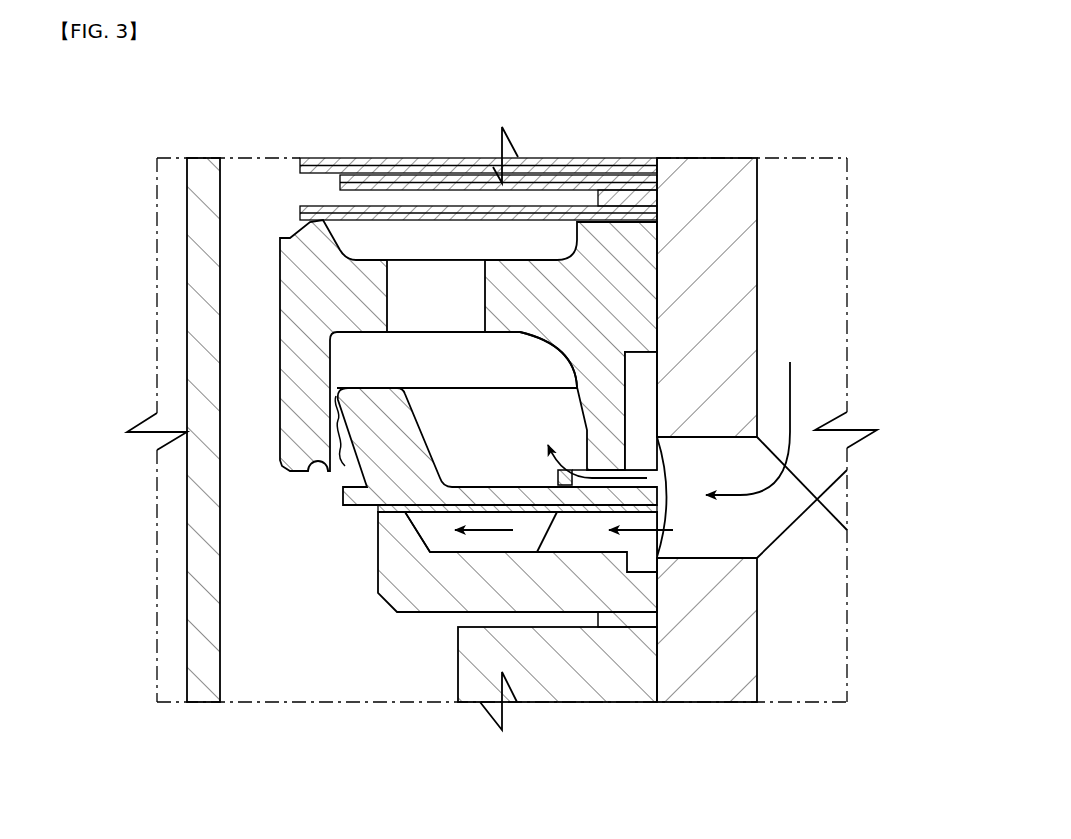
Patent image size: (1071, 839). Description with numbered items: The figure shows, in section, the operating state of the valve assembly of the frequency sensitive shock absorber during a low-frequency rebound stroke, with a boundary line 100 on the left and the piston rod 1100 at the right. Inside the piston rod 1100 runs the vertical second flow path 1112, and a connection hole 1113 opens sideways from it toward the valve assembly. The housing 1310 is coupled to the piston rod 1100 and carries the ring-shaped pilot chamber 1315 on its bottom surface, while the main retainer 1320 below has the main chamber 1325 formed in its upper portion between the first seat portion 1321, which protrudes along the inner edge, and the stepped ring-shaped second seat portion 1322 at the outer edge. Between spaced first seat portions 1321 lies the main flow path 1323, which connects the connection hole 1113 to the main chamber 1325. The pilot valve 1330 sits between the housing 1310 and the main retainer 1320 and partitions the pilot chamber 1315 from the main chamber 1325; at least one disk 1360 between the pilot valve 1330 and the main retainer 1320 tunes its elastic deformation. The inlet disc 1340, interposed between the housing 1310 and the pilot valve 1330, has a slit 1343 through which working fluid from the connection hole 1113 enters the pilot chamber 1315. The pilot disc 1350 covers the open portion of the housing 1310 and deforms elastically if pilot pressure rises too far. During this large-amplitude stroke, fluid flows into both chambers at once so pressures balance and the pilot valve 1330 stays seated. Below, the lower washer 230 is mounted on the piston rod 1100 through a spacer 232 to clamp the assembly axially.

The electronic device 100 is at (187, 213).
The piston rod 1100 is at (710, 176).
The second flow path 1112 is at (812, 253).
The connection hole 1113 is at (718, 556).
The housing 1310 is at (297, 297).
The pilot chamber 1315 is at (370, 358).
The main retainer 1320 is at (485, 670).
The first seat portion 1321 is at (544, 538).
The second seat portion 1322 is at (390, 518).
The main flow path 1323 is at (611, 657).
The main chamber 1325 is at (467, 540).
The pilot valve 1330 is at (356, 463).
The inlet disc 1340 is at (557, 478).
The slit 1343 is at (647, 472).
The pilot disc 1350 is at (318, 206).
The disk 1360 is at (378, 506).
The lower washer 230 is at (636, 686).
The spacer 232 is at (658, 622).